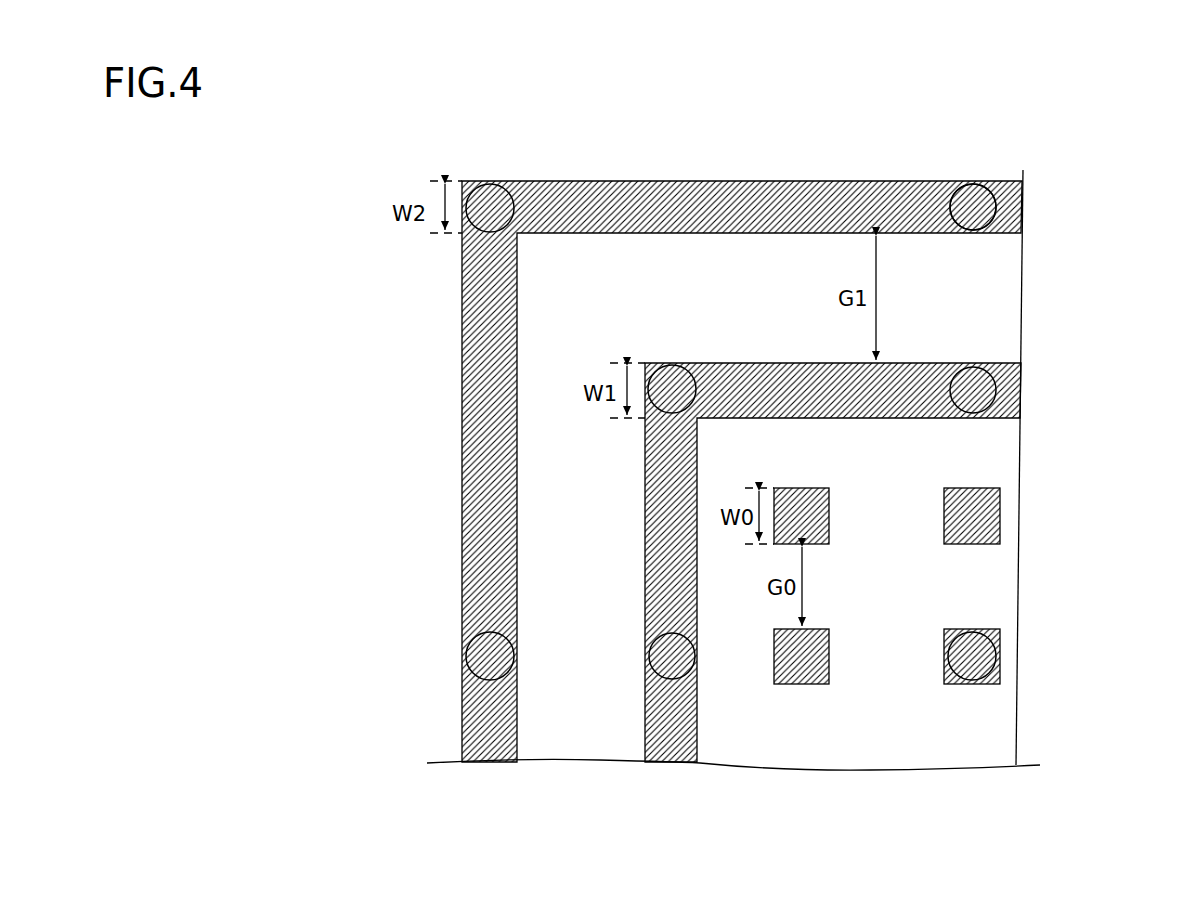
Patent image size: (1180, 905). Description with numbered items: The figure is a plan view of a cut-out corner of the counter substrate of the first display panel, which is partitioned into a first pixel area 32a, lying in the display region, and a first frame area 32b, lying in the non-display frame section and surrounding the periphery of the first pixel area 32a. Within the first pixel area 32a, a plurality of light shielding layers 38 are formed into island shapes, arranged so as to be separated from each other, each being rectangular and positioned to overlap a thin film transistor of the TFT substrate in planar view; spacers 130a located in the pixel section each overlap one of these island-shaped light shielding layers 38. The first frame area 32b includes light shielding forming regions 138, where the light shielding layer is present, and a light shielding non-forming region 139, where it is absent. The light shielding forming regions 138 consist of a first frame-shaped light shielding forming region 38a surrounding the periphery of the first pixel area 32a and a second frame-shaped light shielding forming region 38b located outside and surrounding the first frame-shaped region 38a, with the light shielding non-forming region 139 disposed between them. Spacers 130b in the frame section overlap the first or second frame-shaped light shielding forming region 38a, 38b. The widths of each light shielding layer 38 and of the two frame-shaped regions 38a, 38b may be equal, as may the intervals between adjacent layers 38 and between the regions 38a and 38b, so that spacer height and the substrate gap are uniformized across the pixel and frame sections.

The light shielding forming region 138 is at (652, 471).
The first frame-shaped light shielding forming region 38a is at (647, 462).
The second frame-shaped light shielding forming region 38b is at (482, 405).
The light shielding non-forming region 139 is at (689, 300).
The light shielding layer 38 is at (810, 505).
The spacer 130a is at (961, 634).
The spacer 130b is at (966, 186).
The first pixel area 32a is at (1073, 427).
The first frame area 32b is at (1073, 182).